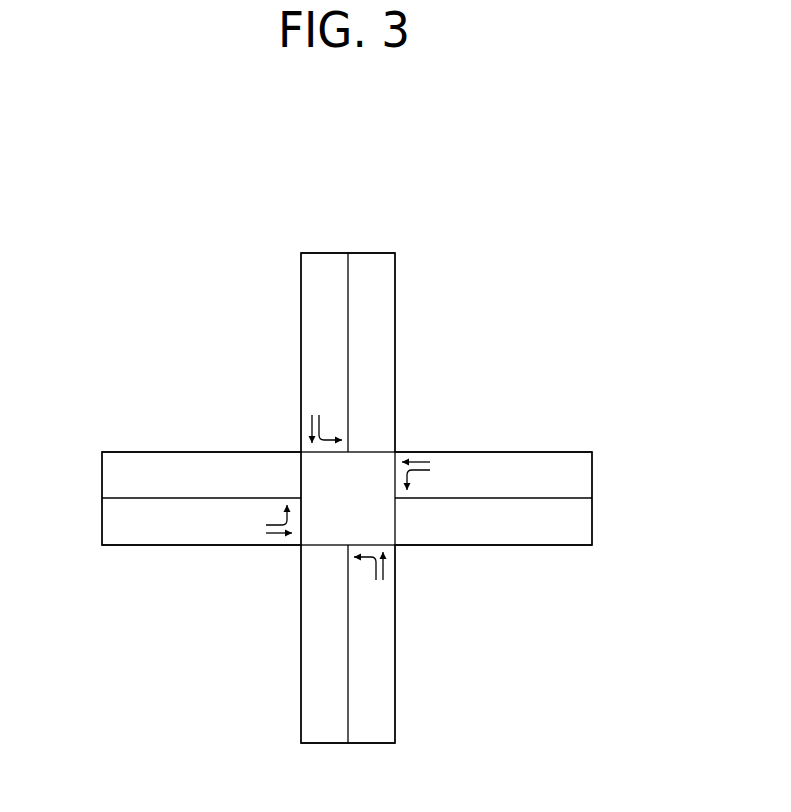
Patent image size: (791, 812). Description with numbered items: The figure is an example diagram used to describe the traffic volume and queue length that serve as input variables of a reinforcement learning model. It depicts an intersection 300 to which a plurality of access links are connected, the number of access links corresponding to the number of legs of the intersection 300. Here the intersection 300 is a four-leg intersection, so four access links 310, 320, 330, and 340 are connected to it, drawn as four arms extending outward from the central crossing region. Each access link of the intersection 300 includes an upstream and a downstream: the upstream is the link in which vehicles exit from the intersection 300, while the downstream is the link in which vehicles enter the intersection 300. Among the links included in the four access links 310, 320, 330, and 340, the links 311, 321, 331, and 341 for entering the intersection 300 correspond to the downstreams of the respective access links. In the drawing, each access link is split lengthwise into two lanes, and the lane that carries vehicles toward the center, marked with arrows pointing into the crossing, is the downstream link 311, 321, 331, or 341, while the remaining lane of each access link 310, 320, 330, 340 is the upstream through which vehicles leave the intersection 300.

The intersection 300 is at (590, 188).
The access link 310 is at (92, 452).
The link for entering the intersection 311 is at (218, 540).
The access link 320 is at (395, 748).
The link for entering the intersection 321 is at (388, 634).
The access link 330 is at (598, 452).
The link for entering the intersection 331 is at (507, 458).
The access link 340 is at (395, 251).
The link for entering the intersection 341 is at (307, 397).